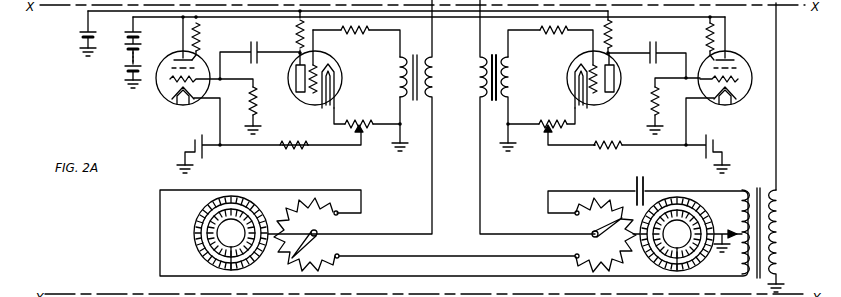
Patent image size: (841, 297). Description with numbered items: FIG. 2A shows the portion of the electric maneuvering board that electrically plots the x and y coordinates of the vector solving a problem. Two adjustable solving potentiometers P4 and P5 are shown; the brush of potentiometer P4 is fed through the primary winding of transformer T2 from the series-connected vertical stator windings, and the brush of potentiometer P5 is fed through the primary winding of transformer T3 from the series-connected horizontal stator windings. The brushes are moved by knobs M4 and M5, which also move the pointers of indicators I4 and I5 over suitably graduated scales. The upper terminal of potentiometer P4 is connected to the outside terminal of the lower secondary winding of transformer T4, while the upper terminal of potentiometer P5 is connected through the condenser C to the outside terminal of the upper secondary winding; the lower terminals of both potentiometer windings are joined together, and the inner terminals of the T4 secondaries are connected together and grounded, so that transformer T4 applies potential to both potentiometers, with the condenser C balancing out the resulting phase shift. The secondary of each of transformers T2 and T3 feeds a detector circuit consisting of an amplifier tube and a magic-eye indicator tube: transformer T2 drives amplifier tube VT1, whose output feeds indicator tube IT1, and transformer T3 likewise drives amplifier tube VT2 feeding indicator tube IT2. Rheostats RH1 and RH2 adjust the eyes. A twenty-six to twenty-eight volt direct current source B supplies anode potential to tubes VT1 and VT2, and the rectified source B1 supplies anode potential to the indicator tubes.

The direct current source B is at (80, 44).
The rectified anode potential source B1 is at (143, 45).
The indicator tube IT1 is at (162, 98).
The amplifier tube VT1 is at (331, 68).
The rheostat RH1 is at (375, 103).
The transformer T2 is at (416, 101).
The transformer T3 is at (481, 108).
The amplifier tube VT2 is at (572, 73).
The rheostat RH2 is at (566, 118).
The indicator tube IT2 is at (752, 97).
The solving potentiometer P4 is at (324, 200).
The knob M4 is at (229, 231).
The indicator I4 is at (236, 264).
The solving potentiometer P5 is at (604, 200).
The condenser C is at (647, 190).
The knob M5 is at (681, 231).
The indicator I5 is at (690, 266).
The transformer T4 is at (757, 282).